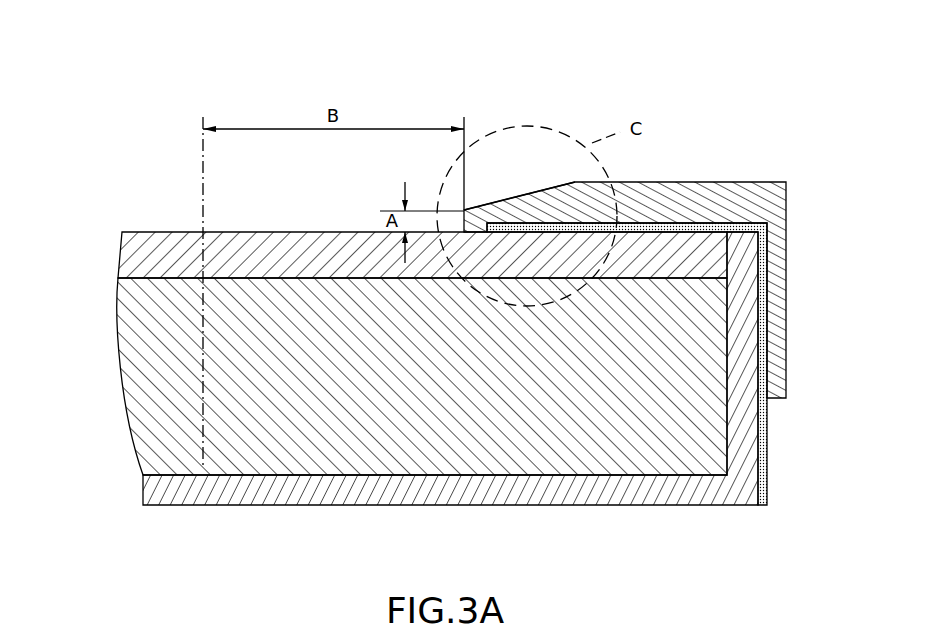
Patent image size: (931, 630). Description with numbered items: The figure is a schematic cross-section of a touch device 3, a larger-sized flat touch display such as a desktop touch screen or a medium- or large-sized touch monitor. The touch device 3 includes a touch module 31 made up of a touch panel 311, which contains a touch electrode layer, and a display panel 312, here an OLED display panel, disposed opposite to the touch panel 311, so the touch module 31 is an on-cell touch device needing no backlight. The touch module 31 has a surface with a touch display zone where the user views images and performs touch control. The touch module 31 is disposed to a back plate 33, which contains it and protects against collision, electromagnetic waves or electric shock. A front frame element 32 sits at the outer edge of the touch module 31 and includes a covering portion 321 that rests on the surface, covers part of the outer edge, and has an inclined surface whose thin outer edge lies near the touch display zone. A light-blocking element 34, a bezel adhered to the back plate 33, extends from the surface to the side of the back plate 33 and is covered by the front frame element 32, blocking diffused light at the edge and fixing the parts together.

The touch device 3 is at (162, 56).
The touch module 31 is at (390, 318).
The touch panel 311 is at (138, 262).
The display panel 312 is at (130, 358).
The front frame element 32 is at (641, 275).
The covering portion 321 is at (500, 200).
The back plate 33 is at (587, 504).
The light-blocking element 34 is at (765, 488).